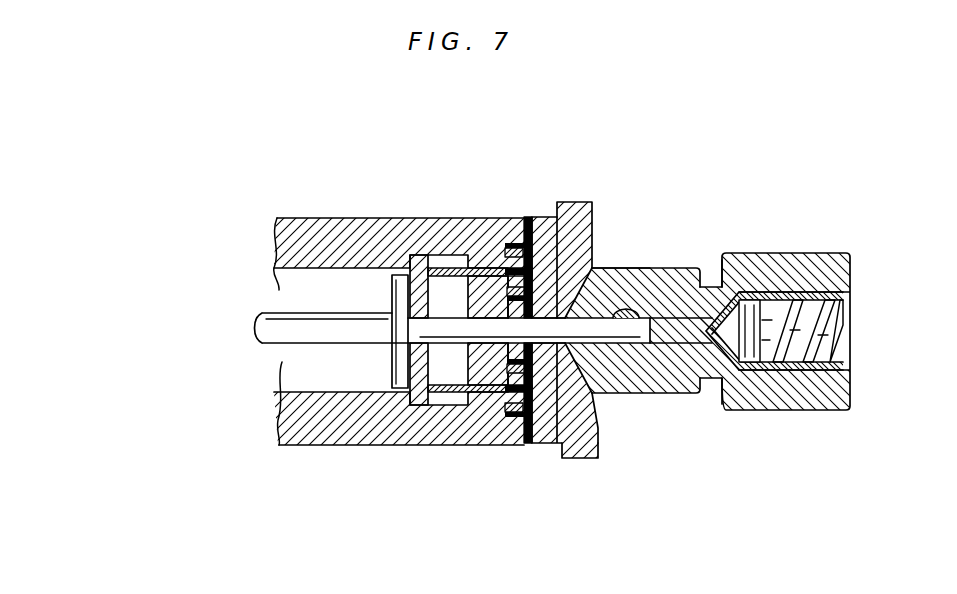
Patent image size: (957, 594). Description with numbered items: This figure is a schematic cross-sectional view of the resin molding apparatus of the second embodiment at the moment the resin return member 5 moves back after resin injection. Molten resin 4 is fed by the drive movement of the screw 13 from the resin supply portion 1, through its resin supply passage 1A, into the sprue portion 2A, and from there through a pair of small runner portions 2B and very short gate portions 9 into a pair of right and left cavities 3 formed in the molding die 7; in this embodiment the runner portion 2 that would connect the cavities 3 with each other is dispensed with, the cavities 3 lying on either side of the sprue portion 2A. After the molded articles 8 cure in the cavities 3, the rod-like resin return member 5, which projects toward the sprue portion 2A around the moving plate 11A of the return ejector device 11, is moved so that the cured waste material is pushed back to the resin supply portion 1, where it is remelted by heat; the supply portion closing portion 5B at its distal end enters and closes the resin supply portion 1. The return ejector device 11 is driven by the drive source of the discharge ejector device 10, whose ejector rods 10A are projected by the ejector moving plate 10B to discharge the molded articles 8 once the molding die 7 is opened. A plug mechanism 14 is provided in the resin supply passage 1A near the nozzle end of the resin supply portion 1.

The resin supply portion 1 is at (600, 298).
The resin supply passage 1A is at (724, 280).
The runner portion 2 is at (593, 398).
The sprue portion 2A is at (585, 290).
The runner portions 2B is at (510, 252).
The cavities 3 is at (525, 250).
The molten resin 4 is at (704, 395).
The resin return member 5 is at (428, 348).
The supply portion closing portion 5B is at (660, 362).
The molding die 7 is at (530, 215).
The molded articles 8 is at (560, 212).
The gate portions 9 is at (588, 250).
The discharge ejector device 10 is at (404, 257).
The ejector rods 10A is at (445, 272).
The ejector moving plate 10B is at (421, 265).
The return ejector device 11 is at (266, 398).
The moving plate 11A is at (393, 366).
The screw 13 is at (791, 366).
The plug mechanism 14 is at (638, 302).